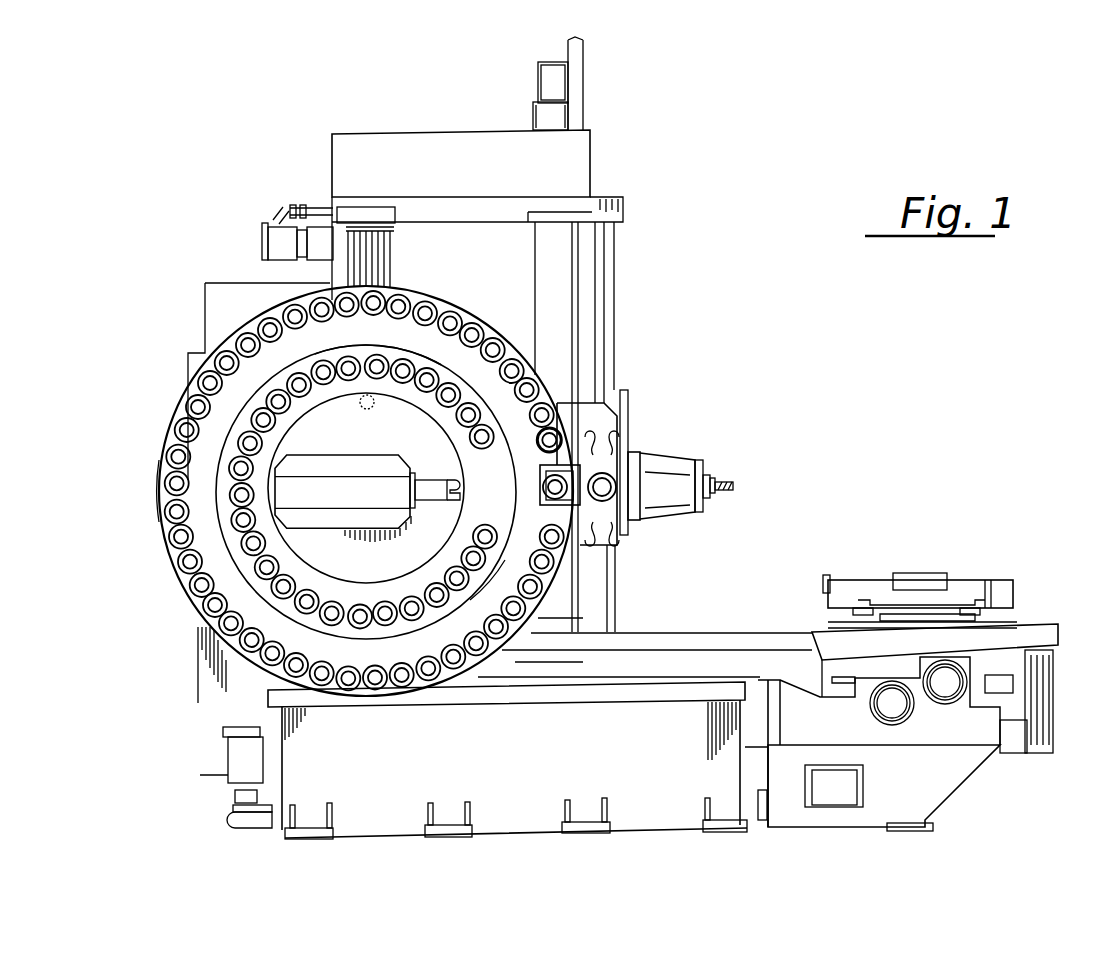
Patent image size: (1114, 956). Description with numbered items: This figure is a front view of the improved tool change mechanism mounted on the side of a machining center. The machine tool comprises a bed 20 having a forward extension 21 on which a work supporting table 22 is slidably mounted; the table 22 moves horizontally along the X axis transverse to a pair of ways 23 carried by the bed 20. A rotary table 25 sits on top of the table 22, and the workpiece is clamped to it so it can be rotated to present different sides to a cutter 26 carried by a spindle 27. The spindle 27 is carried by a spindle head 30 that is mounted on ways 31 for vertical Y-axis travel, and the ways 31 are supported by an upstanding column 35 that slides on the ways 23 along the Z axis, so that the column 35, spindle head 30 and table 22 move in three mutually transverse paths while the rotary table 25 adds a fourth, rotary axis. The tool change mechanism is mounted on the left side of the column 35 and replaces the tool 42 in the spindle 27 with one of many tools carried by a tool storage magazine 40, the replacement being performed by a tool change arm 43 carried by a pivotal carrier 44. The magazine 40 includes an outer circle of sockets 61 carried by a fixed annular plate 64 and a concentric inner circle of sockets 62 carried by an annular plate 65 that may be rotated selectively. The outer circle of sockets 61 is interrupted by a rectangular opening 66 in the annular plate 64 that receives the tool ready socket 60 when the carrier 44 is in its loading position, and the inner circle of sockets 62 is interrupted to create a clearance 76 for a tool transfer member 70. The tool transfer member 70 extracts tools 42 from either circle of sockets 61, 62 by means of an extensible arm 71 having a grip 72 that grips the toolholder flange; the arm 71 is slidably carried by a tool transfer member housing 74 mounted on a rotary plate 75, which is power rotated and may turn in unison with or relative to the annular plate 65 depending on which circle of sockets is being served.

The bed 20 is at (650, 803).
The forward extension 21 is at (950, 773).
The work supporting table 22 is at (987, 657).
The ways 23 is at (645, 629).
The rotary table 25 is at (1013, 587).
The cutter 26 is at (733, 486).
The spindle 27 is at (667, 472).
The spindle head 30 is at (631, 397).
The ways 31 is at (628, 248).
The column 35 is at (465, 240).
The tool storage magazine 40 is at (146, 522).
The tool 42 is at (723, 468).
The tool change arm 43 is at (624, 547).
The pivotal carrier 44 is at (635, 404).
The tool ready socket 60 is at (560, 495).
The outer circle of sockets 61 is at (500, 345).
The inner circle of sockets 62 is at (272, 398).
The annular plate 64 is at (193, 473).
The annular plate 65 is at (388, 352).
The rectangular opening 66 is at (540, 481).
The tool transfer member 70 is at (321, 534).
The extensible arm 71 is at (431, 482).
The grip 72 is at (454, 497).
The tool transfer member housing 74 is at (343, 484).
The rotary plate 75 is at (462, 472).
The clearance 76 is at (487, 502).